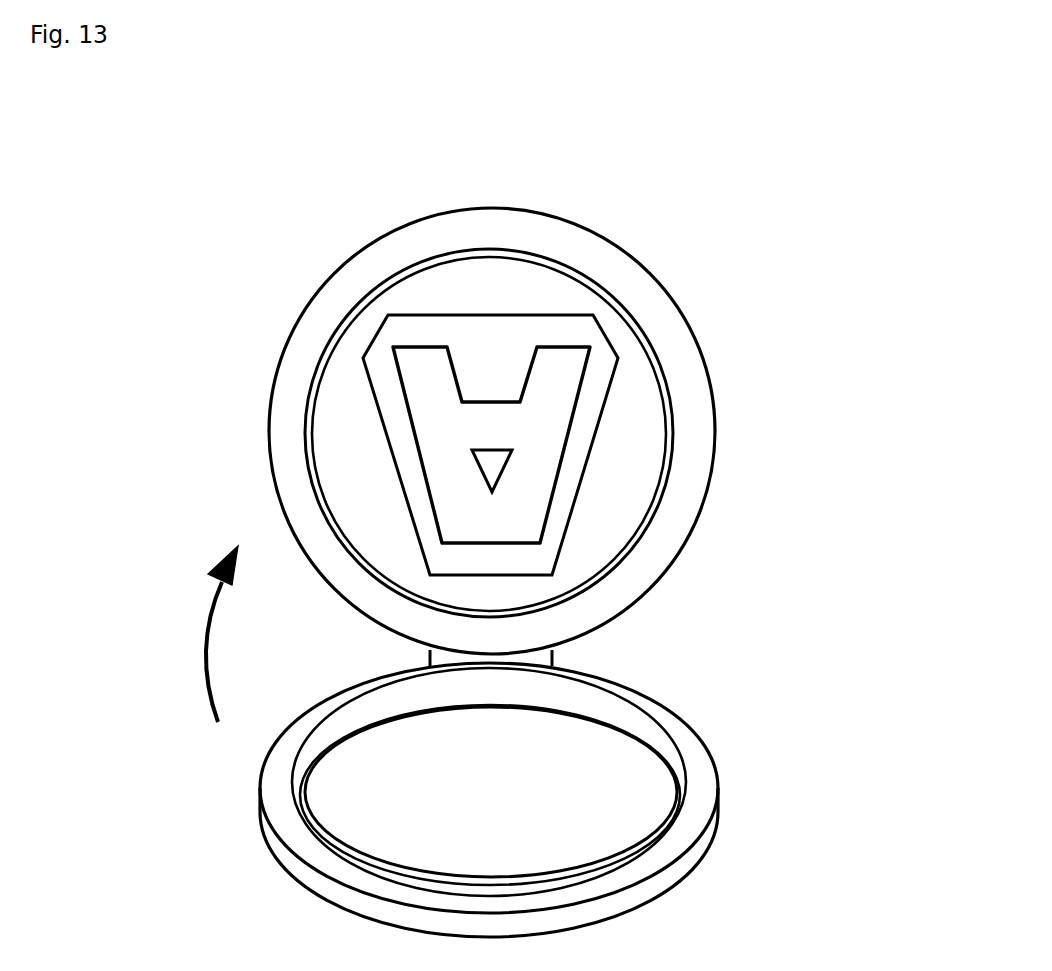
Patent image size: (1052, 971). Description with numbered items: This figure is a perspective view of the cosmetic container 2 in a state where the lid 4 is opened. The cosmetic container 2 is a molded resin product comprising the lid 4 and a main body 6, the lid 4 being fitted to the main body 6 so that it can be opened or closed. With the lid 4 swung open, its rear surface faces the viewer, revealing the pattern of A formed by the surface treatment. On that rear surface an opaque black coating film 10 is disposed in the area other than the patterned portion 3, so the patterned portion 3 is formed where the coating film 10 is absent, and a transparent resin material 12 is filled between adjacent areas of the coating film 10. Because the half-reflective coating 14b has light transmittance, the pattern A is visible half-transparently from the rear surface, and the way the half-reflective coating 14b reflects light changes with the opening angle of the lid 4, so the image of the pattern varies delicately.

The cosmetic container 2 is at (716, 172).
The patterned portion 3 is at (563, 364).
The lid 4 is at (705, 437).
The main body 6 is at (632, 720).
The coating film 10 is at (612, 477).
The transparent resin material 12 is at (423, 367).
The half-reflective coating 14b is at (392, 387).